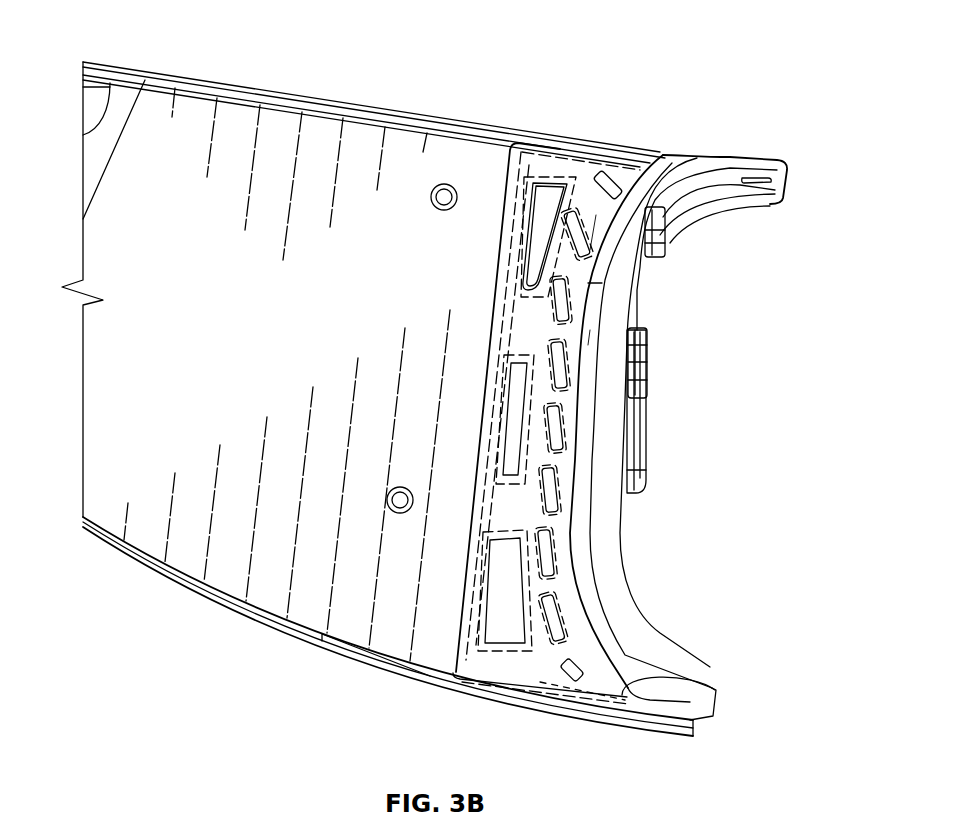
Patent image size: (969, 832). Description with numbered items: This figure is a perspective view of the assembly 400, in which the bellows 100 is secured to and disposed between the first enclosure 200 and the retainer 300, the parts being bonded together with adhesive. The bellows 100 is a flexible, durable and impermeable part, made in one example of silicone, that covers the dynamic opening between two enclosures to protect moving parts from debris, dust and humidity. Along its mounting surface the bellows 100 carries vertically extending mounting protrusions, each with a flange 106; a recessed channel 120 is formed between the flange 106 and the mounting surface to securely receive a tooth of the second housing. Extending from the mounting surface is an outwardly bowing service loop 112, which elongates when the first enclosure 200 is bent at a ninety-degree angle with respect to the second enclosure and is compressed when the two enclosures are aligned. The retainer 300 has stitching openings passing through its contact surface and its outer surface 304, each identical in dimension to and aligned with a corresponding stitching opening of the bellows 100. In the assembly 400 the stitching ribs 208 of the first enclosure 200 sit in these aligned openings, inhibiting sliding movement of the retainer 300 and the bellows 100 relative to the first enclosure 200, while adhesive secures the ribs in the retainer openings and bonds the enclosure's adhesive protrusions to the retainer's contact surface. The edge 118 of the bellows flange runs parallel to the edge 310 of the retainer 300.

The bellows 100 is at (802, 184).
The flange 106 is at (652, 345).
The service loop 112 is at (672, 170).
The edge of the flange 118 is at (498, 246).
The recessed channel 120 is at (637, 405).
The first enclosure 200 is at (145, 42).
The stitching ribs 208 is at (553, 545).
The retainer 300 is at (549, 114).
The outer surface 304 is at (572, 160).
The edge of the retainer 310 is at (500, 300).
The assembly 400 is at (767, 111).